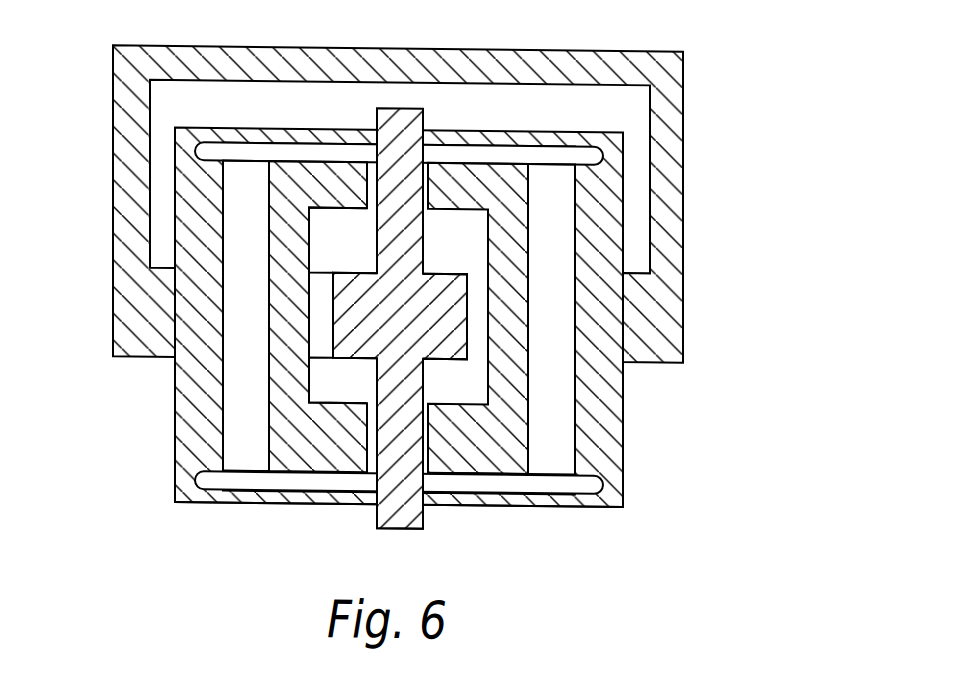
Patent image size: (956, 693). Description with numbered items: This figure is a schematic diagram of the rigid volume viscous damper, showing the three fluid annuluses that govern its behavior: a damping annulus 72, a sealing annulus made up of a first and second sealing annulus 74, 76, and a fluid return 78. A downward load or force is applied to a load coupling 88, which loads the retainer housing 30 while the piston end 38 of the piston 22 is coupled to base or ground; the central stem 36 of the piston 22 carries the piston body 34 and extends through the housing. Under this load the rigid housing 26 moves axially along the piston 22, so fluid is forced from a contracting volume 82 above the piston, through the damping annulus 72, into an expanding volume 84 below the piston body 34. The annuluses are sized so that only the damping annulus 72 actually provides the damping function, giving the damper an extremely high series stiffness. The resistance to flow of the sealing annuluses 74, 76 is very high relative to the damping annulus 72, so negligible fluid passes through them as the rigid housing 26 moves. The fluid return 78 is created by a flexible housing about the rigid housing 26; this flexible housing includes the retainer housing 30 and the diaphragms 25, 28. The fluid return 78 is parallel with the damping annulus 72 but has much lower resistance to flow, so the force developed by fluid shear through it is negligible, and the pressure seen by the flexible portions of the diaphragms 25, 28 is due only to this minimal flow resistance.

The piston 22 is at (463, 315).
The diaphragm 25 is at (252, 125).
The rigid housing 26 is at (180, 498).
The diaphragm 28 is at (560, 500).
The retainer housing 30 is at (173, 395).
The piston body 34 is at (443, 270).
The shaft 36 is at (430, 162).
The piston end 38 is at (400, 524).
The damping annulus 72 is at (285, 432).
The first sealing annulus 74 is at (432, 165).
The second sealing annulus 76 is at (458, 460).
The fluid return 78 is at (242, 217).
The contracting volume 82 is at (338, 241).
The expanding volume 84 is at (338, 381).
The load coupling 88 is at (683, 60).